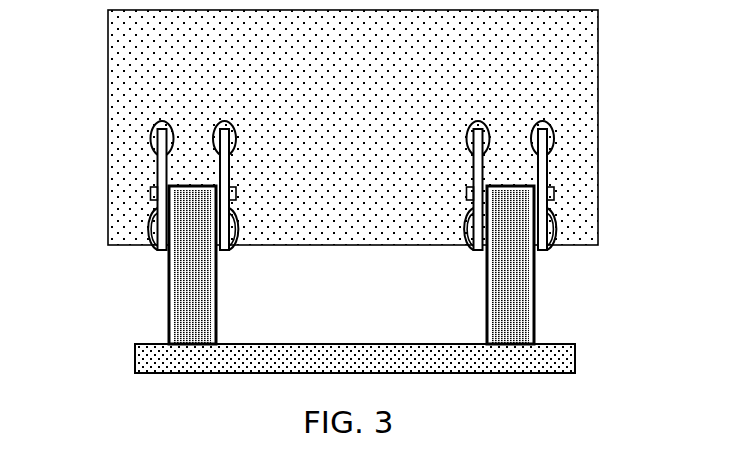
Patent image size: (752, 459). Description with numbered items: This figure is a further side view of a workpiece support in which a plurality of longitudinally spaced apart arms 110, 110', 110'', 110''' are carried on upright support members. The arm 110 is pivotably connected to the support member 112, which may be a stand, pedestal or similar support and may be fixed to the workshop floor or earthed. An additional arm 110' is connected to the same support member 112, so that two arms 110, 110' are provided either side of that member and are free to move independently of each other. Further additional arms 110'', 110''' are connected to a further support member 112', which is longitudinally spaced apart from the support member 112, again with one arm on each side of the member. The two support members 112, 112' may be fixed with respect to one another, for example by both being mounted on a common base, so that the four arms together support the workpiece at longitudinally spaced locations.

The arm 110 is at (594, 185).
The additional arm 110' is at (441, 185).
The additional arm 110'' is at (263, 185).
The additional arm 110''' is at (103, 185).
The support member 112 is at (546, 265).
The further support member 112' is at (159, 265).